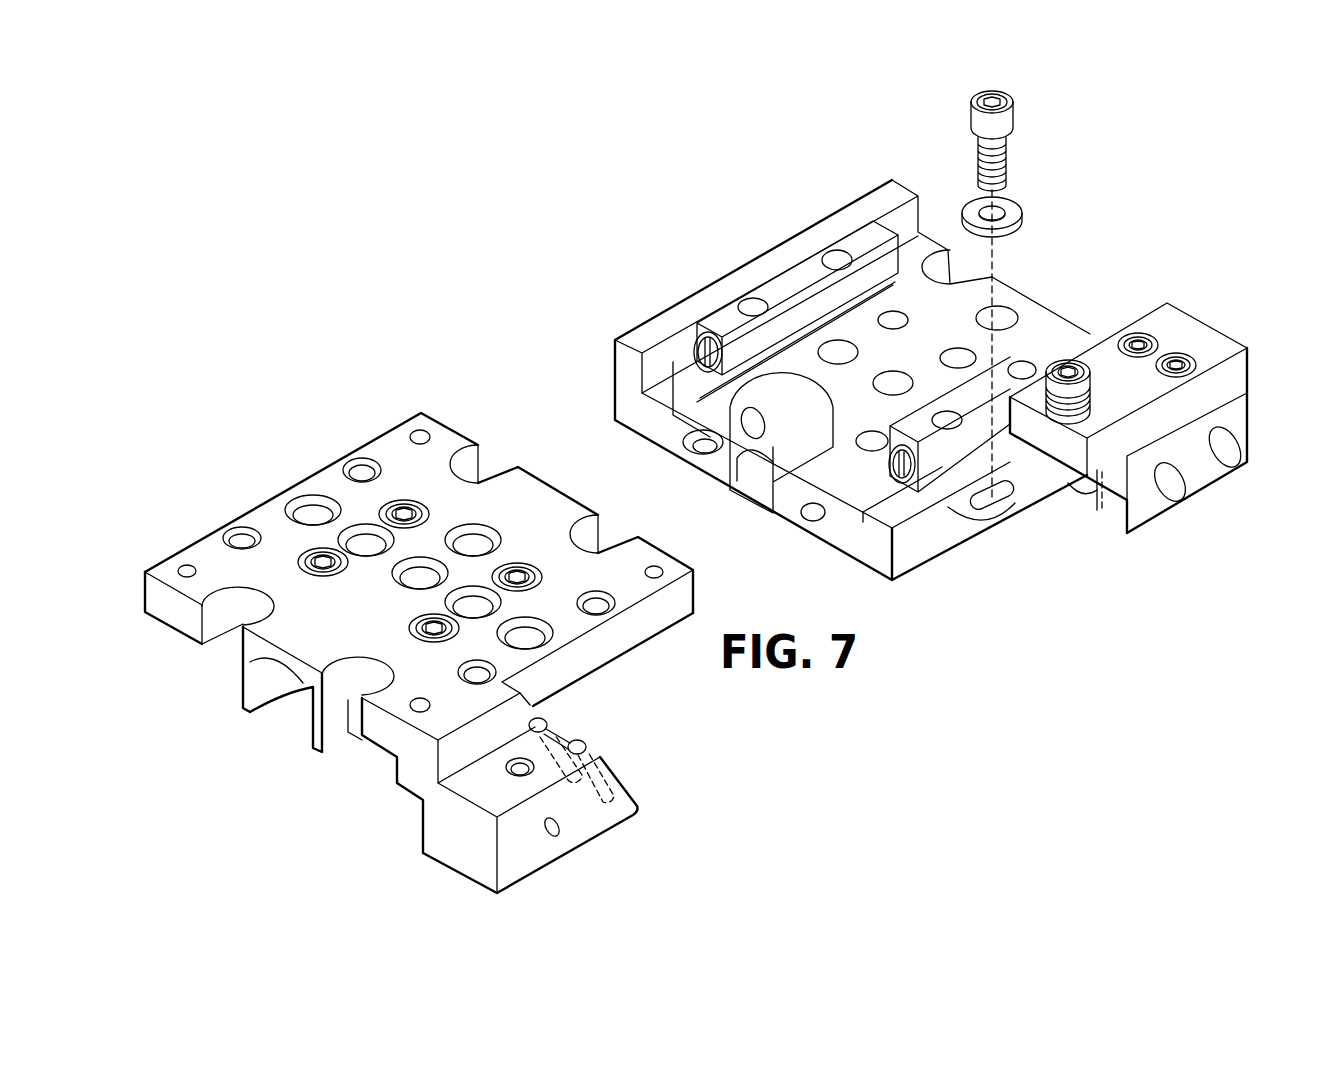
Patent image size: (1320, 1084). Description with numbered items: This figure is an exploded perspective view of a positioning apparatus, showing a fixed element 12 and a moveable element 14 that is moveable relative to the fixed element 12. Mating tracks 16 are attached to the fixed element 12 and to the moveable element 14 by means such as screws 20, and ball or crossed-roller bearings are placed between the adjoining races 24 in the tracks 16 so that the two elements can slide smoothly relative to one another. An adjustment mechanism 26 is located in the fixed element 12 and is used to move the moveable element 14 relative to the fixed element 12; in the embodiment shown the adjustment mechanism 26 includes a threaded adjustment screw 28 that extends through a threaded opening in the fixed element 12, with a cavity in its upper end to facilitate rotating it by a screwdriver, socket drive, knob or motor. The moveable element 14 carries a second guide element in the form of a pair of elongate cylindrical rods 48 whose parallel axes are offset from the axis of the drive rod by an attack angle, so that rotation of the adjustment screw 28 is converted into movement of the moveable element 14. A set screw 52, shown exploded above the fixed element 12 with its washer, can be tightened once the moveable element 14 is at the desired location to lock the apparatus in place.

The fixed element 12 is at (1020, 310).
The moveable element 14 is at (552, 505).
The mating track 16 is at (792, 285).
The screws 20 is at (430, 516).
The races 24 is at (843, 296).
The adjustment mechanism 26 is at (1094, 364).
The threaded adjustment screw 28 is at (1096, 390).
The elongate cylindrical rods 48 is at (547, 722).
The set screw 52 is at (1014, 122).